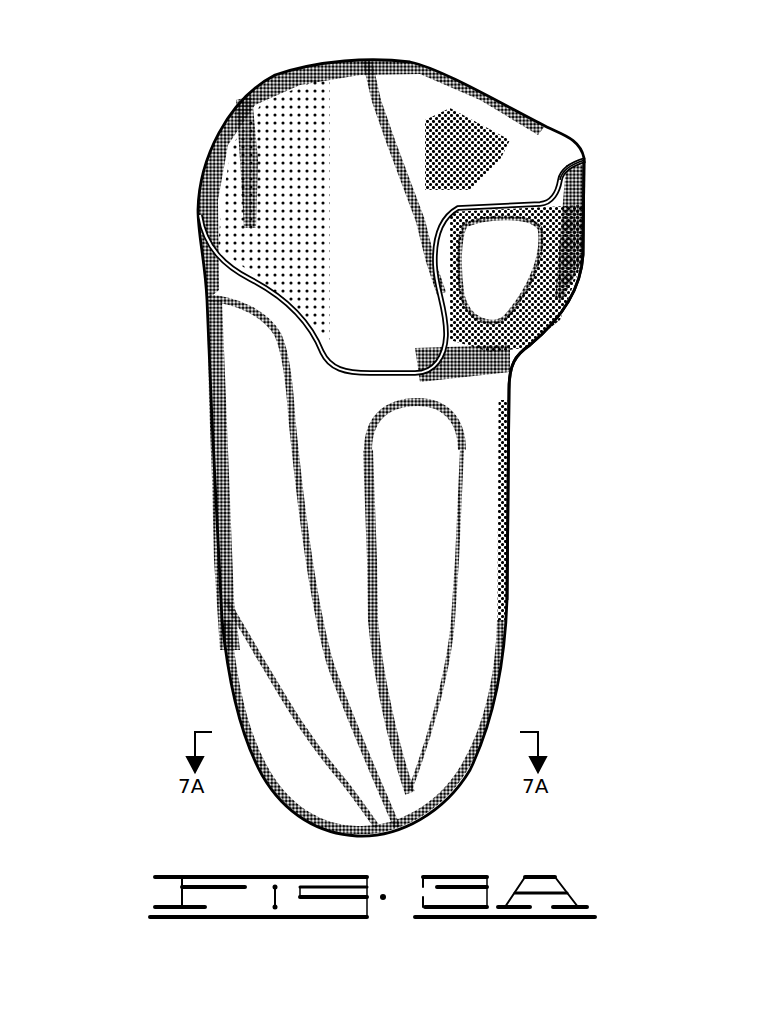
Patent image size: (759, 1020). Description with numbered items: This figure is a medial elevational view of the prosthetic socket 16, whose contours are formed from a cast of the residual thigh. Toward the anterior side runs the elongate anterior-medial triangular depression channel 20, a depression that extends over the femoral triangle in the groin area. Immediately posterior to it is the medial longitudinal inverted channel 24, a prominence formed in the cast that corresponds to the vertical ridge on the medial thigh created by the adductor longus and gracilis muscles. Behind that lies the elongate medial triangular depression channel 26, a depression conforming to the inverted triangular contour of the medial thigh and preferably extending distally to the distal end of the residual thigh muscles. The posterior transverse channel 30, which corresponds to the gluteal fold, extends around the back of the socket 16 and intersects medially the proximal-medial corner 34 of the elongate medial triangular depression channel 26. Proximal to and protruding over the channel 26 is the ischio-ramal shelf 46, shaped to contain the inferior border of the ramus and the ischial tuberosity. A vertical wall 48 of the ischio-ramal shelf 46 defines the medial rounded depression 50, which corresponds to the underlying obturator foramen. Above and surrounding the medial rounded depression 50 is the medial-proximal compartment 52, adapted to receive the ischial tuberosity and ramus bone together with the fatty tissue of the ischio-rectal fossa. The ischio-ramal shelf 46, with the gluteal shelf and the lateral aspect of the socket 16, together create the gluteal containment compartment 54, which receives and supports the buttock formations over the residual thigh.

The socket 16 is at (518, 92).
The elongate anterior-medial triangular depression channel 20 is at (232, 378).
The medial longitudinal inverted channel 24 is at (330, 482).
The elongate medial triangular depression channel 26 is at (443, 483).
The posterior transverse channel 30 is at (512, 357).
The proximal-medial corner 34 is at (443, 433).
The ischio-ramal shelf 46 is at (560, 310).
The vertical wall 48 is at (492, 205).
The medial rounded depression 50 is at (510, 272).
The medial-proximal compartment 52 is at (585, 196).
The gluteal containment compartment 54 is at (600, 162).